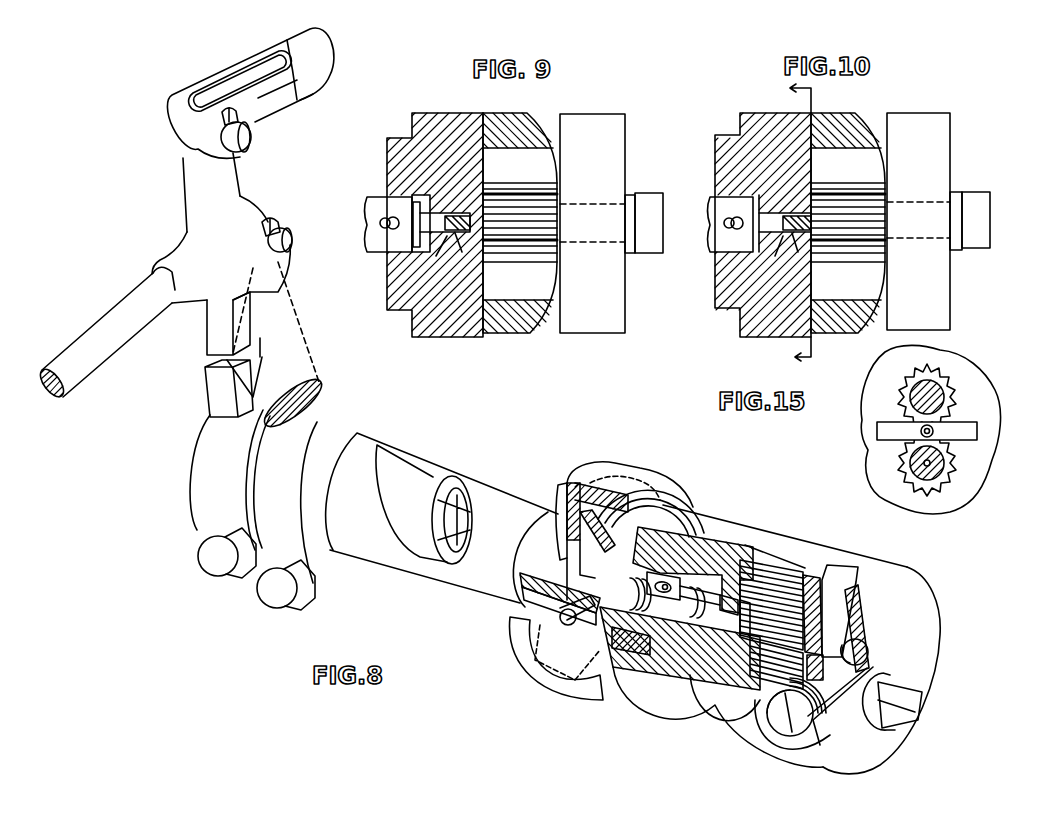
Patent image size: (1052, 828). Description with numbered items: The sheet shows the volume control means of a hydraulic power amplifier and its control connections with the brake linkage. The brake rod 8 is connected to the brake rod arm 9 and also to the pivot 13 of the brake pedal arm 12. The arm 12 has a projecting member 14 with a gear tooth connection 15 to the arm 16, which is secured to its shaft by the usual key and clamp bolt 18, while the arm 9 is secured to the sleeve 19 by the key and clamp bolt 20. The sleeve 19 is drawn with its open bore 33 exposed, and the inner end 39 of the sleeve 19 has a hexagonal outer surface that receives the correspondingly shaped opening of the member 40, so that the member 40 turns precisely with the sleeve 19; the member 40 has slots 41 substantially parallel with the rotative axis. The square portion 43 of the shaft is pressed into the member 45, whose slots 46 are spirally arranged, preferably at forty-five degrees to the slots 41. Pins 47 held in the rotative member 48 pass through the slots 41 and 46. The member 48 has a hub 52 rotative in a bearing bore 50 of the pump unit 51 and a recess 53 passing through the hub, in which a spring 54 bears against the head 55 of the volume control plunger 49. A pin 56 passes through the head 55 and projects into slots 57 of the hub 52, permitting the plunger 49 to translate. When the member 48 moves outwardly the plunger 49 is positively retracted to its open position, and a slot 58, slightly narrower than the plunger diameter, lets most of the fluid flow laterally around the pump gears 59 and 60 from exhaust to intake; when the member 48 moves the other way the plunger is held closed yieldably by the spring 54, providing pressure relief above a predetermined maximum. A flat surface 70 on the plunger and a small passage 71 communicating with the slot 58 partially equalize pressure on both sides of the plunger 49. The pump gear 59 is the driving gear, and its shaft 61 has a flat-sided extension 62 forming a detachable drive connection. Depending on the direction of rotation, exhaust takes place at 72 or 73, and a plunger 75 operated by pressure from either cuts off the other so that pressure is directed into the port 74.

In FIG. 8, the brake rod 8 is at (107, 330).
In FIG. 8, the brake rod arm 9 is at (310, 408).
In FIG. 8, the brake pedal arm 12 is at (197, 174).
In FIG. 8, the pivot 13 is at (273, 233).
In FIG. 8, the projecting member 14 is at (218, 318).
In FIG. 10, the gear tooth connection 15 is at (800, 225).
In FIG. 8, the gear tooth connection 15 is at (253, 373).
In FIG. 8, the arm 16 is at (220, 388).
In FIG. 8, the clamp bolt 18 is at (210, 570).
In FIG. 8, the sleeve 19 is at (383, 470).
In FIG. 8, the clamp bolt 20 is at (270, 597).
In FIG. 8, the bore 33 is at (424, 504).
In FIG. 8, the inner end of the sleeve 39 is at (562, 550).
In FIG. 8, the member 40 is at (590, 470).
In FIG. 8, the slots 41 is at (560, 615).
In FIG. 8, the square portion 43 is at (513, 600).
In FIG. 8, the member 45 is at (597, 513).
In FIG. 8, the slots 46 is at (585, 603).
In FIG. 8, the pins 47 is at (563, 620).
In FIG. 8, the rotative member 48 is at (677, 507).
In FIG. 9, the volume control plunger 49 is at (432, 224).
In FIG. 10, the volume control plunger 49 is at (770, 222).
In FIG. 15, the volume control plunger 49 is at (945, 434).
In FIG. 8, the volume control plunger 49 is at (721, 595).
In FIG. 9, the bearing bore 50 is at (392, 262).
In FIG. 8, the bearing bore 50 is at (753, 636).
In FIG. 9, the pump unit 51 is at (435, 225).
In FIG. 10, the pump unit 51 is at (763, 225).
In FIG. 15, the pump unit 51 is at (865, 447).
In FIG. 9, the hub 52 is at (375, 200).
In FIG. 10, the hub 52 is at (715, 200).
In FIG. 8, the recess 53 is at (663, 571).
In FIG. 8, the spring 54 is at (682, 591).
In FIG. 8, the head 55 is at (677, 586).
In FIG. 9, the pin 56 is at (394, 217).
In FIG. 10, the pin 56 is at (738, 217).
In FIG. 8, the pin 56 is at (700, 577).
In FIG. 9, the slots 57 is at (383, 226).
In FIG. 10, the slots 57 is at (727, 226).
In FIG. 9, the slot 58 is at (480, 205).
In FIG. 10, the slot 58 is at (808, 205).
In FIG. 15, the slot 58 is at (968, 422).
In FIG. 8, the slot 58 is at (716, 634).
In FIG. 9, the pump gear 59 is at (527, 213).
In FIG. 10, the pump gear 59 is at (865, 213).
In FIG. 15, the pump gear 59 is at (962, 478).
In FIG. 8, the pump gear 59 is at (767, 657).
In FIG. 15, the pump gear 60 is at (945, 372).
In FIG. 8, the pump gear 60 is at (797, 590).
In FIG. 9, the shaft 61 is at (628, 250).
In FIG. 10, the shaft 61 is at (954, 248).
In FIG. 15, the shaft 61 is at (932, 470).
In FIG. 8, the shaft 61 is at (887, 687).
In FIG. 9, the flat-sided extension 62 is at (648, 205).
In FIG. 10, the flat-sided extension 62 is at (975, 205).
In FIG. 8, the flat-sided extension 62 is at (927, 703).
In FIG. 9, the flat surface 70 is at (438, 258).
In FIG. 10, the flat surface 70 is at (778, 236).
In FIG. 9, the passage 71 is at (457, 232).
In FIG. 10, the passage 71 is at (795, 232).
In FIG. 9, the exhaust 72 is at (520, 223).
In FIG. 10, the exhaust 72 is at (848, 223).
In FIG. 9, the exhaust 73 is at (518, 303).
In FIG. 10, the exhaust 73 is at (846, 302).
In FIG. 8, the exhaust 73 is at (730, 667).
In FIG. 8, the port 74 is at (836, 622).
In FIG. 8, the plunger 75 is at (857, 657).